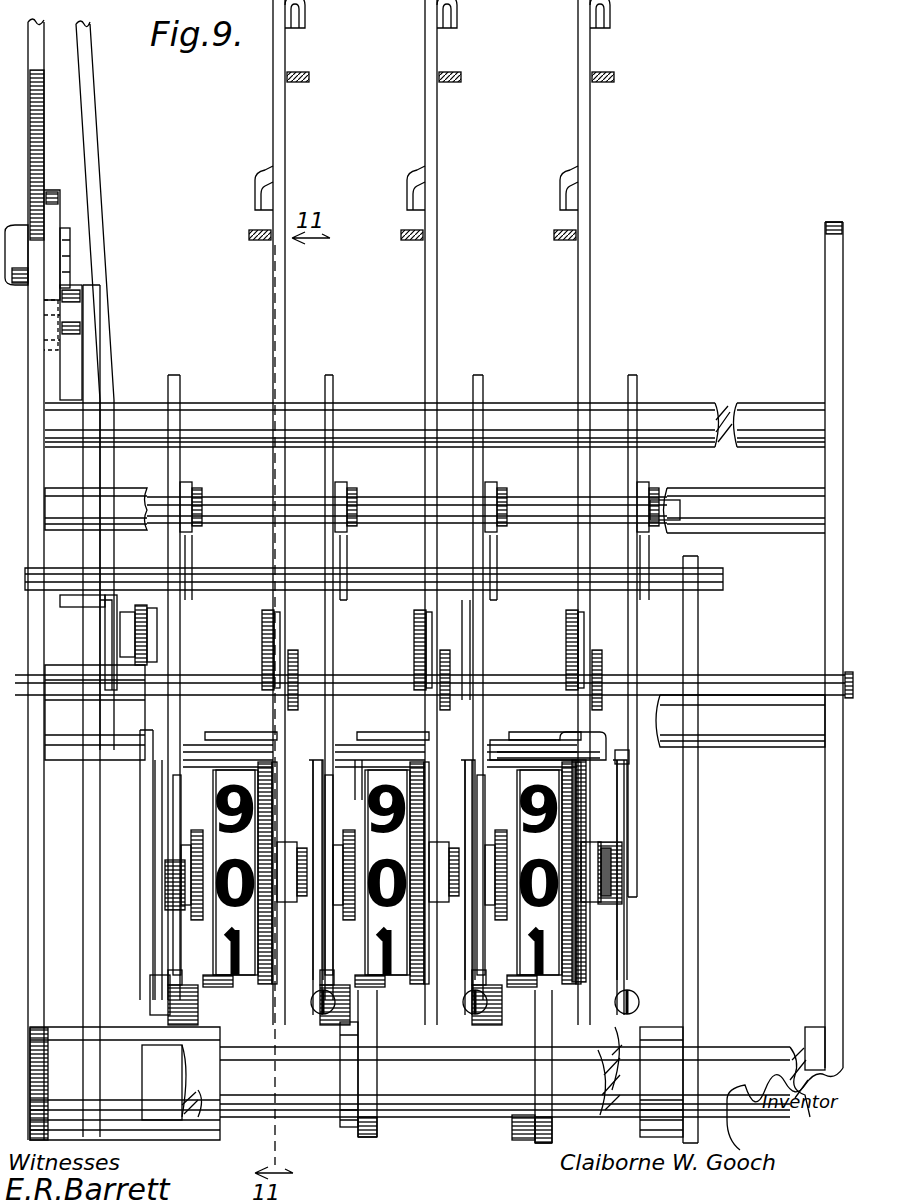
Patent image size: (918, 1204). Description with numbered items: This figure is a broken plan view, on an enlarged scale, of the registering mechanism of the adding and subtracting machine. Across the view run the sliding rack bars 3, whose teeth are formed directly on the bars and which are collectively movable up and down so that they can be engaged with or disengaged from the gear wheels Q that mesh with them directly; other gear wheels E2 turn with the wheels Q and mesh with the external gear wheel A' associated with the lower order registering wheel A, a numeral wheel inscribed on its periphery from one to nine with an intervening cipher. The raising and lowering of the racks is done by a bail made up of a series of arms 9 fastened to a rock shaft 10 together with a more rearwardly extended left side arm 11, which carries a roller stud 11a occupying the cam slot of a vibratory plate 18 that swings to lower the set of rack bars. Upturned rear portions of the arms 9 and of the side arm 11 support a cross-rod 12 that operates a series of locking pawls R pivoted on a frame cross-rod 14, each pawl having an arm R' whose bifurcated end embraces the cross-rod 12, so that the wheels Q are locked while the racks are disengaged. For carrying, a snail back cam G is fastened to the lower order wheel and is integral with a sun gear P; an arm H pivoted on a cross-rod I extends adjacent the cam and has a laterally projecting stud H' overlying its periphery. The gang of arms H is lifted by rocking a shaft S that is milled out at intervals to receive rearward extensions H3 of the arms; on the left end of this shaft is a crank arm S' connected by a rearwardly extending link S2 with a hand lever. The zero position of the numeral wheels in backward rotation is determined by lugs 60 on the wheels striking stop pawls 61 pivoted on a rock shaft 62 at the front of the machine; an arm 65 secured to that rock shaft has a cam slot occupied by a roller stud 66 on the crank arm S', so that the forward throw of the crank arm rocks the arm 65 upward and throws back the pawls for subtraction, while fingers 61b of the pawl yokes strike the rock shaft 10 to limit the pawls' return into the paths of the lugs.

The arms 9 is at (560, 1010).
The link S2 is at (102, 246).
The vibratory plate 18 is at (58, 206).
The roller stud 11a is at (72, 315).
The left side arm 11 is at (90, 366).
The sliding rack bars 3 is at (578, 283).
The frame cross-rod 14 is at (522, 502).
The locking pawls R is at (435, 495).
The pawl arm R' is at (417, 566).
The cross-rod 12 is at (724, 578).
The crank arm S' is at (68, 642).
The roller stud 66 is at (178, 606).
The gear wheels E2 is at (566, 648).
The gear wheels Q is at (298, 658).
The rearward extensions H3 is at (470, 680).
The shaft S is at (434, 745).
The cross-rod I is at (648, 766).
The lower order registering wheel A is at (462, 866).
The external gear wheel A' is at (624, 871).
The sun gear P is at (352, 768).
The snail back cam G is at (620, 858).
The arm H is at (133, 880).
The laterally projecting stud H' is at (146, 908).
The arm 65 is at (150, 966).
The rock shaft 62 is at (350, 1120).
The lugs 60 is at (470, 1025).
The rock shaft 10 is at (155, 1085).
The stop pawls 61 is at (510, 1035).
The fingers 61b is at (530, 1140).